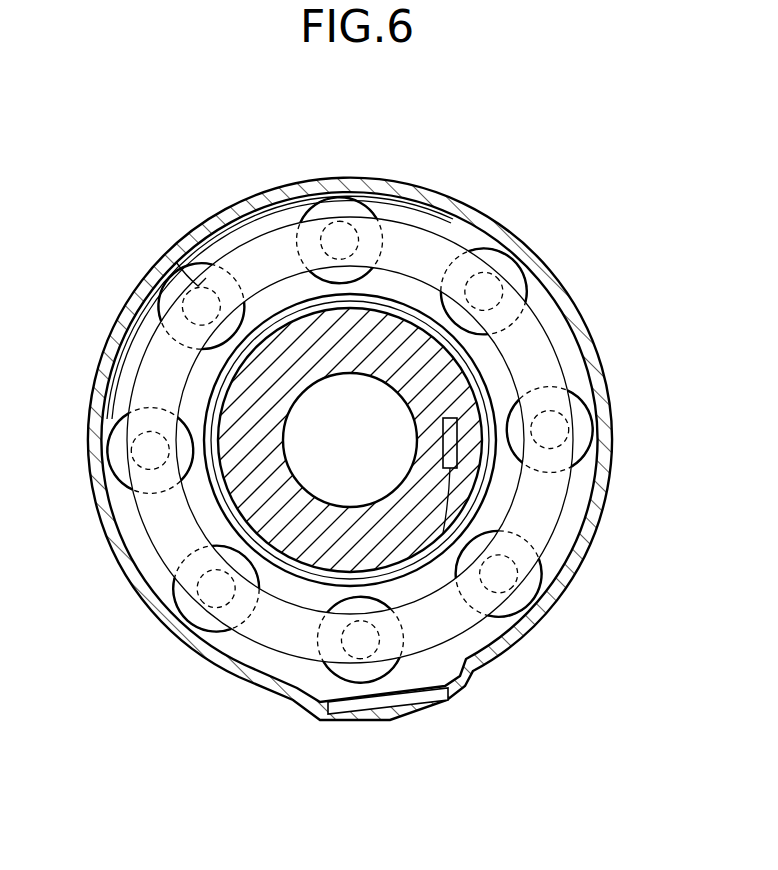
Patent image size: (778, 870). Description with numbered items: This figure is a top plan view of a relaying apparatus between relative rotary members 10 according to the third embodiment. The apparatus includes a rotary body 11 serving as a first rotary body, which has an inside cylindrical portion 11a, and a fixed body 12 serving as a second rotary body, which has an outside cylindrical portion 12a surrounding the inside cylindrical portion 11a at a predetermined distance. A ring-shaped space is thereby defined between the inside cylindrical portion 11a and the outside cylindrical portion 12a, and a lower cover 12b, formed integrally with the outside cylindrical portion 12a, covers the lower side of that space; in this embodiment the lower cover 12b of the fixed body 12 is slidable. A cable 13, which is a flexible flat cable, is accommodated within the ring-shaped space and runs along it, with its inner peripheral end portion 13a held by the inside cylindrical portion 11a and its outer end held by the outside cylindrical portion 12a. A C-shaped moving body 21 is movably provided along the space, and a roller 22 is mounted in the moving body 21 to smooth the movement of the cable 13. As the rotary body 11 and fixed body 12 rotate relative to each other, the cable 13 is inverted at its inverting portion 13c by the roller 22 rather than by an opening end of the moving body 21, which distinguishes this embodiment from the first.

The relaying apparatus between relative rotary members 10 is at (532, 187).
The rotary body 11 is at (421, 303).
The inside cylindrical portion 11a is at (378, 314).
The fixed body 12 is at (404, 449).
The outside cylindrical portion 12a is at (617, 383).
The lower cover 12b is at (590, 468).
The cable 13 is at (466, 504).
The inner peripheral end portion 13a is at (458, 470).
The inverting portion 13c is at (538, 304).
The moving body 21 is at (130, 377).
The roller 22 is at (183, 268).